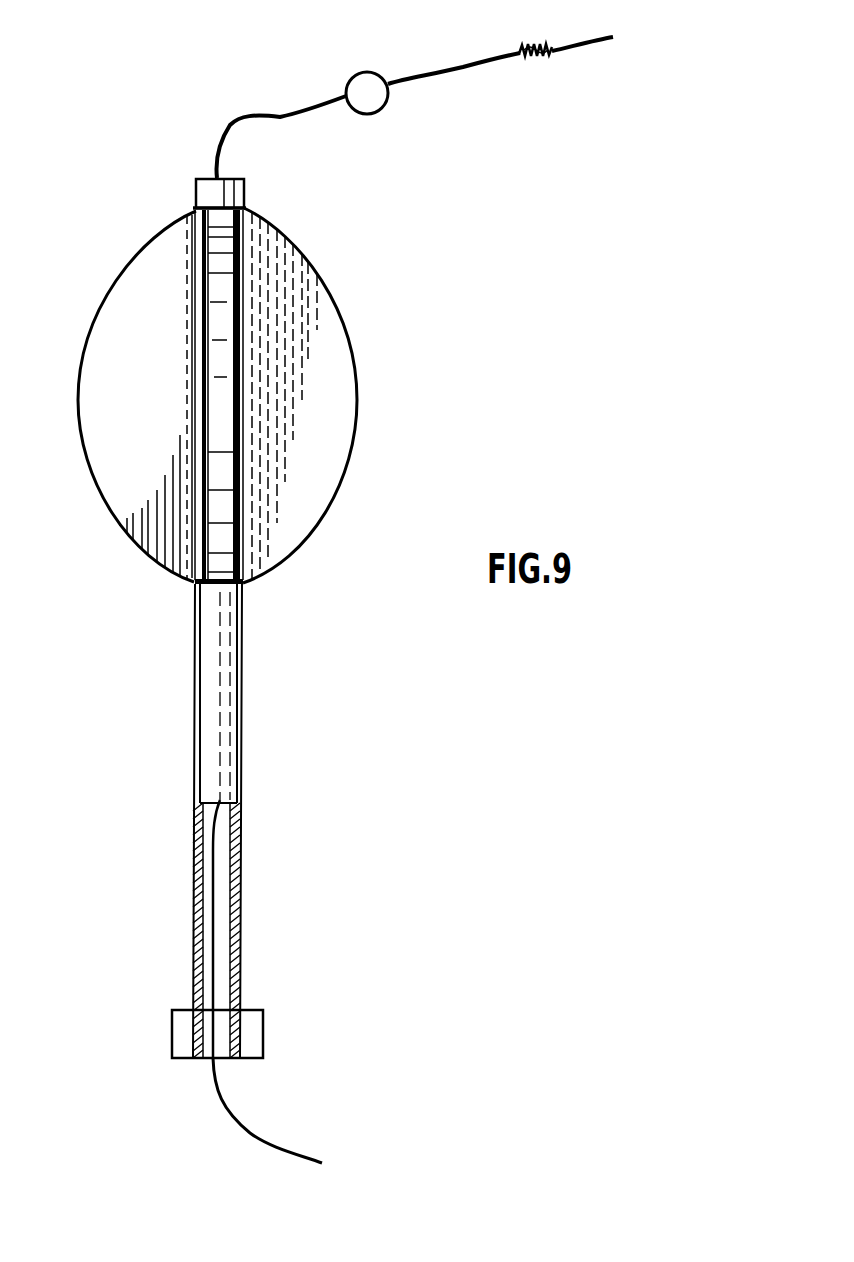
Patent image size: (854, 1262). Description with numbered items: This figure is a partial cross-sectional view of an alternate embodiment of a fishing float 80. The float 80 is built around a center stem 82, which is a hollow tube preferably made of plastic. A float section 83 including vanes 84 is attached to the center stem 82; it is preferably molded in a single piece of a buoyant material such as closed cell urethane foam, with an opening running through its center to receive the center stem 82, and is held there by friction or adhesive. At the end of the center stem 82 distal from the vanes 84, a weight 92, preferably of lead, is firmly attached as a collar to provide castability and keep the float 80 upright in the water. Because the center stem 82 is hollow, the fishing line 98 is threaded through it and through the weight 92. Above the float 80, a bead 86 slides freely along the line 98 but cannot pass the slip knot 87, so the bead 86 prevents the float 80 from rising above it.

The float 80 is at (412, 270).
The center stem 82 is at (235, 667).
The float section 83 is at (215, 208).
The vanes 84 is at (107, 298).
The bead 86 is at (366, 78).
The slip knot 87 is at (530, 65).
The weight 92 is at (257, 1037).
The fishing line 98 is at (260, 113).